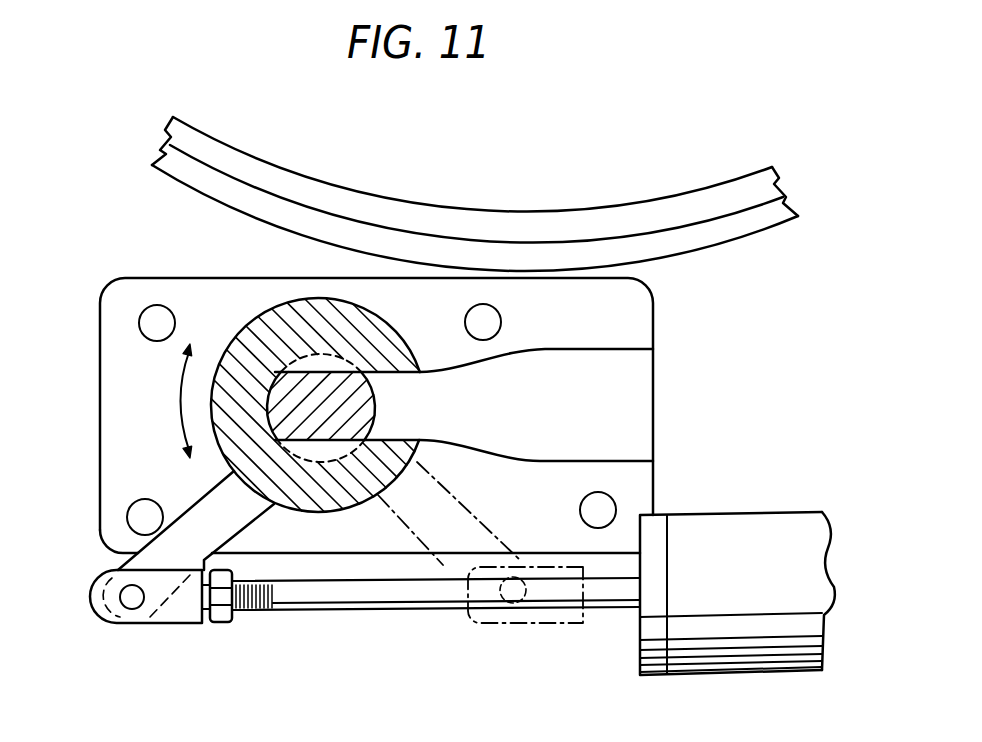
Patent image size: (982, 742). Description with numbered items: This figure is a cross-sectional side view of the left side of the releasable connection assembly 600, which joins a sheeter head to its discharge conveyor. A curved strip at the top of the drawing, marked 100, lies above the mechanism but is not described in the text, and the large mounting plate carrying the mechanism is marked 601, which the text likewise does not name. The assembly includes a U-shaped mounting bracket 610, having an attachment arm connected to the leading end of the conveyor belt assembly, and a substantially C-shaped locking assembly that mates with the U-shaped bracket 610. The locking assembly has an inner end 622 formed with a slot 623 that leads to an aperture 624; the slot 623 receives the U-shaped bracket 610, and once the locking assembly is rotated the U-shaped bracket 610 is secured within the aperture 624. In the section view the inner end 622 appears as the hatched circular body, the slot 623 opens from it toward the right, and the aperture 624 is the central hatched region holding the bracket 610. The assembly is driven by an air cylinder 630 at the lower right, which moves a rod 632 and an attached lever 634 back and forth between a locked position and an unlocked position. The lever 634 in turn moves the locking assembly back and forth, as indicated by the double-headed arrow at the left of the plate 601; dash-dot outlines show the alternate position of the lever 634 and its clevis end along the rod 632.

The flexible sheet / film (F) 100 is at (733, 232).
The releasable connection assembly 600 is at (344, 435).
The mounting plate 601 is at (130, 376).
The U-shaped mounting bracket 610 is at (372, 370).
The inner end 622 is at (298, 322).
The slot 623 is at (420, 398).
The aperture 624 is at (316, 502).
The air cylinder 630 is at (738, 538).
The rod 632 is at (378, 598).
The lever 634 is at (200, 503).